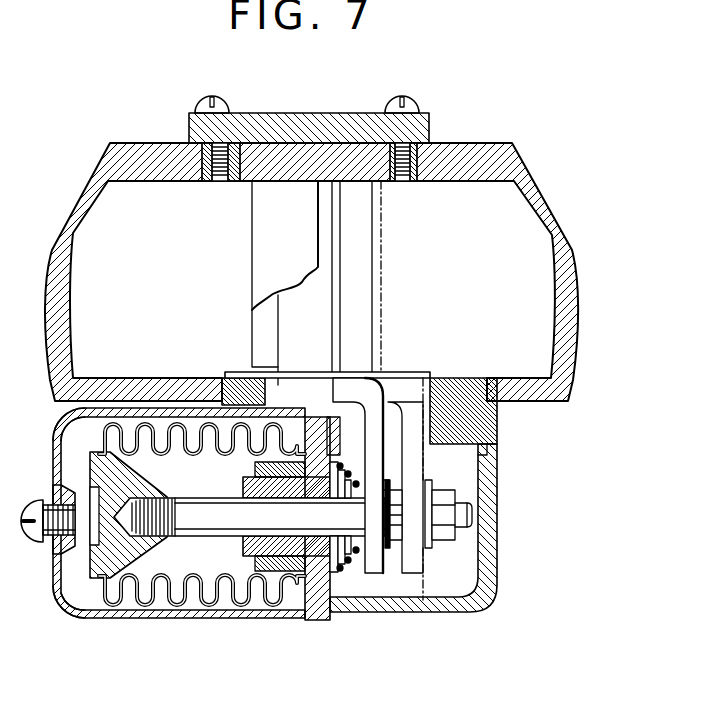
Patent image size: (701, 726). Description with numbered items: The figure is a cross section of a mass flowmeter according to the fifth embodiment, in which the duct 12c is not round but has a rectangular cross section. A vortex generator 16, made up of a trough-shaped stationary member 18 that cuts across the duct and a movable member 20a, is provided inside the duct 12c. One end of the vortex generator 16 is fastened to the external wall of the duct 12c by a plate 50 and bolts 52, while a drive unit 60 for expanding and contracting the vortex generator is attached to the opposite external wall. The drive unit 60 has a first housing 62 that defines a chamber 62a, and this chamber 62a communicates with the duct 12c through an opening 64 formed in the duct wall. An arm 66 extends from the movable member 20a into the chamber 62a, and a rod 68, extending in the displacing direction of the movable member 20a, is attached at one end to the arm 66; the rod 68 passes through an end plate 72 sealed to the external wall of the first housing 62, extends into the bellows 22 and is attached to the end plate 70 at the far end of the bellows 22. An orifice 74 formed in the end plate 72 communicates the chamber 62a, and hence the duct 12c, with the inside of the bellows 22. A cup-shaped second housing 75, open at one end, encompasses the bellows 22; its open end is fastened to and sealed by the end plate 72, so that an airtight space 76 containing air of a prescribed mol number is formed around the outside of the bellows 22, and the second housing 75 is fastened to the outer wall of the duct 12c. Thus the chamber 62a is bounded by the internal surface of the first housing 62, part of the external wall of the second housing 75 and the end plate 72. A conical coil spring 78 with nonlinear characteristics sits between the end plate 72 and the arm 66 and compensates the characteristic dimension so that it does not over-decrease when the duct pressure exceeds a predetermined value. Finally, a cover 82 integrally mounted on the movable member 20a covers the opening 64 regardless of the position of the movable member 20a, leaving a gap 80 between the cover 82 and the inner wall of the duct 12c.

The duct 12c is at (567, 281).
The plate 50 is at (334, 113).
The bolts 52 is at (227, 101).
The vortex generator 16 is at (240, 212).
The stationary member 18 is at (262, 283).
The movable member 20a is at (340, 297).
The cover 82 is at (233, 372).
The gap 80 is at (438, 378).
The drive unit 60 is at (507, 602).
The first housing 62 is at (497, 505).
The airtight space 76 is at (70, 440).
The second housing 75 is at (57, 604).
The end plate 70 is at (90, 563).
The rod 68 is at (210, 536).
The bellows 22 is at (183, 605).
The orifice 74 is at (243, 487).
The end plate 72 is at (316, 614).
The arm 66 is at (398, 466).
The conical coil spring 78 is at (345, 600).
The opening 64 is at (398, 390).
The chamber 62a is at (437, 576).